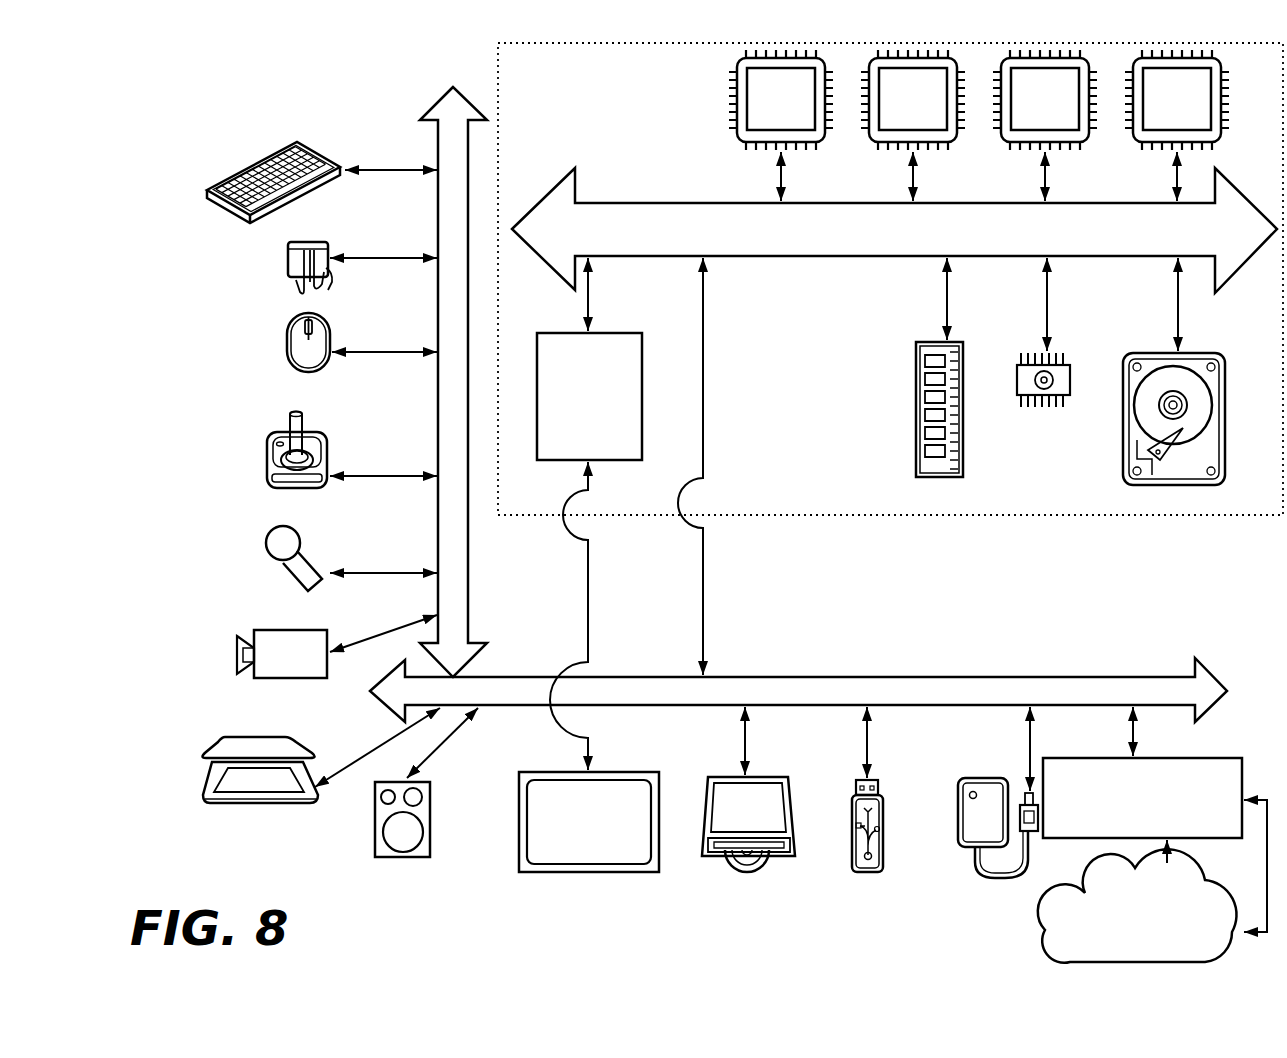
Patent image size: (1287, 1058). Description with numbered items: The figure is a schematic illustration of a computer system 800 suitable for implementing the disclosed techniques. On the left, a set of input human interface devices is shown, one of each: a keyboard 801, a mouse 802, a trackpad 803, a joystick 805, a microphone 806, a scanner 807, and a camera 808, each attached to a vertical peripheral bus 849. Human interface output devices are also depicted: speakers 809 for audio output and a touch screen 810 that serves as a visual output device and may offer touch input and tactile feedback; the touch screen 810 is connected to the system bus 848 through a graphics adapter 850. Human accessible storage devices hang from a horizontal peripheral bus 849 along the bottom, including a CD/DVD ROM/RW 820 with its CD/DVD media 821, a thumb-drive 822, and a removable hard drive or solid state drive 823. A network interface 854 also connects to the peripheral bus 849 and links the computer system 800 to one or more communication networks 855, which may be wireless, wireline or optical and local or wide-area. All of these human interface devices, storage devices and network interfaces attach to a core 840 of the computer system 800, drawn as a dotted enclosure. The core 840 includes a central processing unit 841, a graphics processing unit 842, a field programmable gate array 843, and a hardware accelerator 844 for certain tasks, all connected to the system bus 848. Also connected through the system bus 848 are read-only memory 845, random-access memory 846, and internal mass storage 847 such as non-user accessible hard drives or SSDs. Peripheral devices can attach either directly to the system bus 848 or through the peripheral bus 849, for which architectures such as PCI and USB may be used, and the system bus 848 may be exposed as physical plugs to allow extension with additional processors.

The computer system 800 is at (203, 103).
The keyboard 801 is at (206, 192).
The mouse 802 is at (288, 341).
The trackpad 803 is at (288, 263).
The joystick 805 is at (267, 476).
The microphone 806 is at (266, 545).
The scanner 807 is at (205, 793).
The camera 808 is at (237, 656).
The speakers 809 is at (400, 858).
The touch screen 810 is at (590, 873).
The CD/DVD ROM/RW 820 is at (782, 860).
The CD/DVD media 821 is at (727, 862).
The thumb-drive 822 is at (868, 873).
The removable hard drive or solid state drive 823 is at (972, 848).
The core 840 is at (880, 518).
The central processing unit 841 is at (781, 125).
The graphics processing unit 842 is at (913, 125).
The field programmable gate array 843 is at (1045, 125).
The hardware accelerator 844 is at (1177, 125).
The read-only memory 845 is at (1035, 408).
The random-access memory 846 is at (912, 434).
The internal mass storage 847 is at (1138, 352).
The system bus 848 is at (894, 230).
The peripheral bus 849 is at (438, 132).
The graphics adapter 850 is at (589, 514).
The network interface 854 is at (1155, 819).
The communication networks 855 is at (1043, 936).